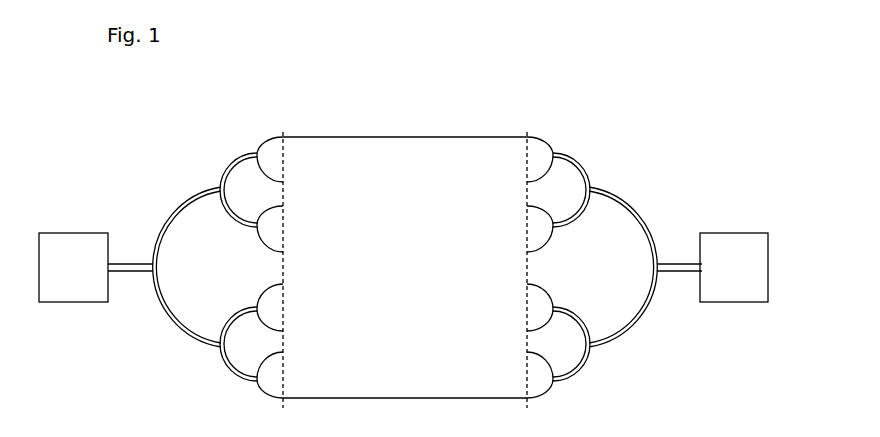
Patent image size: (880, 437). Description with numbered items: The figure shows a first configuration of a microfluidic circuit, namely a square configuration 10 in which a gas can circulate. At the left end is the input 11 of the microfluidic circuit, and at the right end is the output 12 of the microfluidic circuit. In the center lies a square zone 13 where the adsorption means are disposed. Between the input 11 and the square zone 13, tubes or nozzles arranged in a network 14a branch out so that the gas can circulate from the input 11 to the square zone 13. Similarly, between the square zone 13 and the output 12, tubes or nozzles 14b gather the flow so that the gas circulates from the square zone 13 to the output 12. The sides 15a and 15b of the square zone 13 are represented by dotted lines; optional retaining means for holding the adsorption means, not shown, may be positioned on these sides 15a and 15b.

The square configuration 10 is at (143, 125).
The input 11 is at (80, 250).
The output 12 is at (740, 248).
The square zone 13 is at (410, 228).
The network of tubes or nozzles 14a is at (173, 215).
The tubes or nozzles 14b is at (622, 202).
The side of the square zone 15a is at (287, 127).
The side of the square zone 15b is at (528, 125).